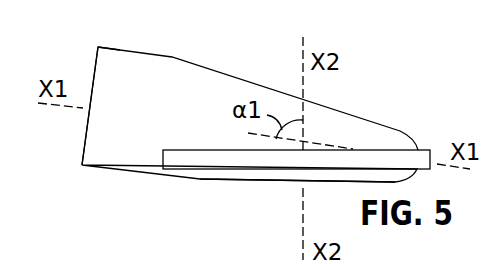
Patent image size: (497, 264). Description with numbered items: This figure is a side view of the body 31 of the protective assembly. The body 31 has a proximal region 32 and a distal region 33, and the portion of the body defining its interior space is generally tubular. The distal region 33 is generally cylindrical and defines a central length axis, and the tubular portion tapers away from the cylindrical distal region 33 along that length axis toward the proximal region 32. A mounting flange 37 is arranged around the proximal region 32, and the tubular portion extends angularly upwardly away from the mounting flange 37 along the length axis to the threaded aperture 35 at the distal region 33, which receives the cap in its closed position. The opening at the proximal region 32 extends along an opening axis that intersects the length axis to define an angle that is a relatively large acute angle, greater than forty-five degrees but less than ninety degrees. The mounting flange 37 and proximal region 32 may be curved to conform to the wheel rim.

The body 31 is at (217, 75).
The proximal region 32 is at (262, 194).
The distal region 33 is at (103, 40).
The threaded aperture 35 is at (85, 139).
The mounting flange 37 is at (200, 161).